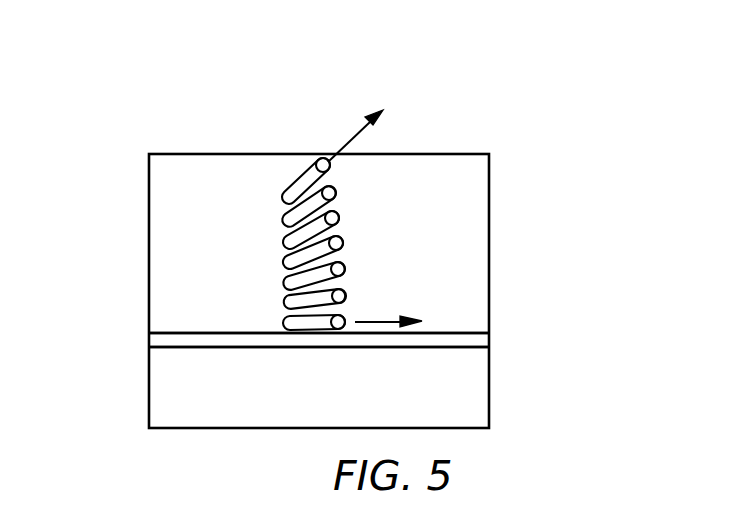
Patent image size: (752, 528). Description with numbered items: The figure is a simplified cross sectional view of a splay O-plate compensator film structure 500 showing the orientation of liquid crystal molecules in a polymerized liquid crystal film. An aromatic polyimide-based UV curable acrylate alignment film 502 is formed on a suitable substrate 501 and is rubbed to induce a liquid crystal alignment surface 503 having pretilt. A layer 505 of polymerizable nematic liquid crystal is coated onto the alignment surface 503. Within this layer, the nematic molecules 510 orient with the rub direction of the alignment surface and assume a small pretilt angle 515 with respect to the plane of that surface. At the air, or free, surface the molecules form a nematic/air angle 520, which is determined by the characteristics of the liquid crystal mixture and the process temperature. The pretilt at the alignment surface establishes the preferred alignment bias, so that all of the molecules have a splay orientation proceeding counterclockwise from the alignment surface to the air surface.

The splay O-plate compensator film structure 500 is at (495, 113).
The substrate 501 is at (146, 395).
The alignment film 502 is at (146, 340).
The liquid crystal alignment surface 503 is at (172, 333).
The layer of polymerizable nematic liquid crystal 505 is at (489, 232).
The nematic molecules 510 is at (283, 242).
The pretilt angle 515 is at (383, 321).
The nematic/air angle 520 is at (353, 137).